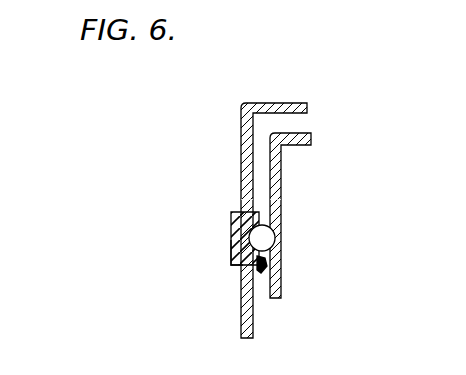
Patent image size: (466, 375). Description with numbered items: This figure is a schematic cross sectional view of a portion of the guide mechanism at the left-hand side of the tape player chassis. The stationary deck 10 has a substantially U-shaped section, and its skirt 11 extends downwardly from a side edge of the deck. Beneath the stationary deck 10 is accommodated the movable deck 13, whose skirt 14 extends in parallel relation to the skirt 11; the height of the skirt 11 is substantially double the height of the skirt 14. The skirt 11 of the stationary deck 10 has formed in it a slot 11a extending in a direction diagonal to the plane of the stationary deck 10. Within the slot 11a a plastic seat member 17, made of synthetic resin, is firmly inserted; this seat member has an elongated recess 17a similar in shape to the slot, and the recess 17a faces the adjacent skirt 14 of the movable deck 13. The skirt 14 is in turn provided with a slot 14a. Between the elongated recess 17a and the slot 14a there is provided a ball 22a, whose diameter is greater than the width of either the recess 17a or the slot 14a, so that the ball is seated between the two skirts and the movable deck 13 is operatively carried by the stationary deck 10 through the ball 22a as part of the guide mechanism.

The stationary deck 10 is at (305, 103).
The skirt 11 is at (243, 315).
The slot 11a is at (252, 268).
The movable deck 13 is at (310, 140).
The skirt 14 is at (283, 298).
The slot 14a is at (281, 249).
The plastic seat member 17 is at (233, 225).
The elongated recess 17a is at (236, 244).
The ball 22a is at (266, 238).